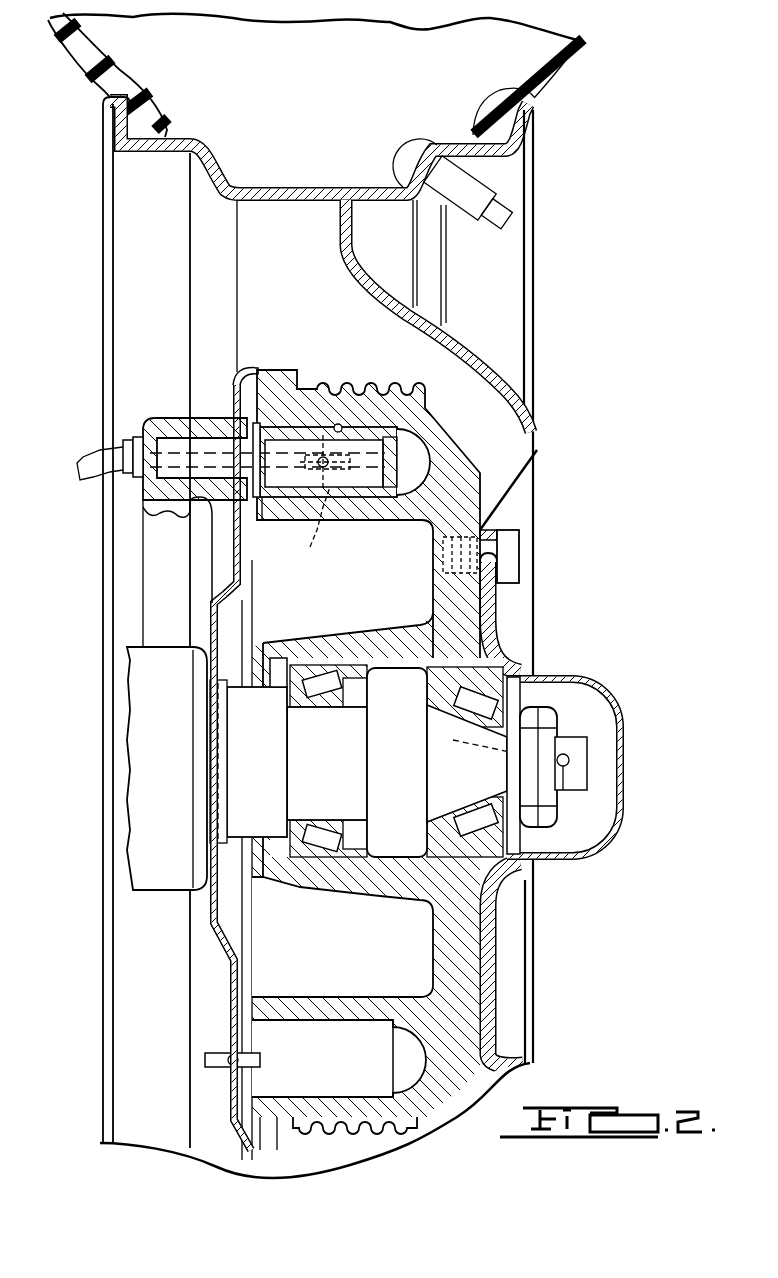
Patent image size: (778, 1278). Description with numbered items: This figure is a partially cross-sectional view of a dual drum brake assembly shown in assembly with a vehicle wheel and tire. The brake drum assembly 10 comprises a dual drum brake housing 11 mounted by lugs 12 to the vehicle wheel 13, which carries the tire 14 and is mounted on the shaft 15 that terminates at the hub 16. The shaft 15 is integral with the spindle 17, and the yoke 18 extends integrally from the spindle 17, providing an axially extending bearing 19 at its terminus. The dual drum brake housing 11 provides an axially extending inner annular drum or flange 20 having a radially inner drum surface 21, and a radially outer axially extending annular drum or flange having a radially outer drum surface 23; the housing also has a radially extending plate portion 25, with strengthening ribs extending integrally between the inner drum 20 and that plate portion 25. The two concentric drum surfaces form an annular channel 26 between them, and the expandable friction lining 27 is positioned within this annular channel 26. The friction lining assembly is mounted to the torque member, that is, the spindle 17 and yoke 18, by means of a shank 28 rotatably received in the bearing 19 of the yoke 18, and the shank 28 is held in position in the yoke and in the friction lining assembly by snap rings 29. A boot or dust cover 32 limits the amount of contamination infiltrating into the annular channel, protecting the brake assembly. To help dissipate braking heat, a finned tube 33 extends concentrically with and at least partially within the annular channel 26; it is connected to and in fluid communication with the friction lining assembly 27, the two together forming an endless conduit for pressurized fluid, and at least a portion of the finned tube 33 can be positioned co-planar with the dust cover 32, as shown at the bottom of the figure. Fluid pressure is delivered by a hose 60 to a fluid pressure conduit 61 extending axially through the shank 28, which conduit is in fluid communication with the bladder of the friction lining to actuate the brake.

The brake drum assembly 10 is at (480, 440).
The dual drum brake housing 11 is at (345, 522).
The lugs 12 is at (513, 548).
The vehicle wheel 13 is at (532, 422).
The tire 14 is at (563, 50).
The shaft 15 is at (342, 776).
The hub 16 is at (625, 727).
The spindle 17 is at (143, 698).
The yoke 18 is at (153, 538).
The bearing 19 is at (140, 487).
The inner annular drum 20 is at (355, 487).
The radially inner drum surface 21 is at (273, 490).
The radially outer drum surface 23 is at (333, 427).
The radially extending plate portion 25 is at (453, 937).
The annular channel 26 is at (290, 1037).
The expandable friction lining 27 is at (363, 413).
The shank 28 is at (247, 443).
The snap rings 29 is at (140, 437).
The dust cover 32 is at (230, 967).
The finned tube 33 is at (170, 1087).
The hose 60 is at (77, 468).
The fluid pressure conduit 61 is at (157, 443).